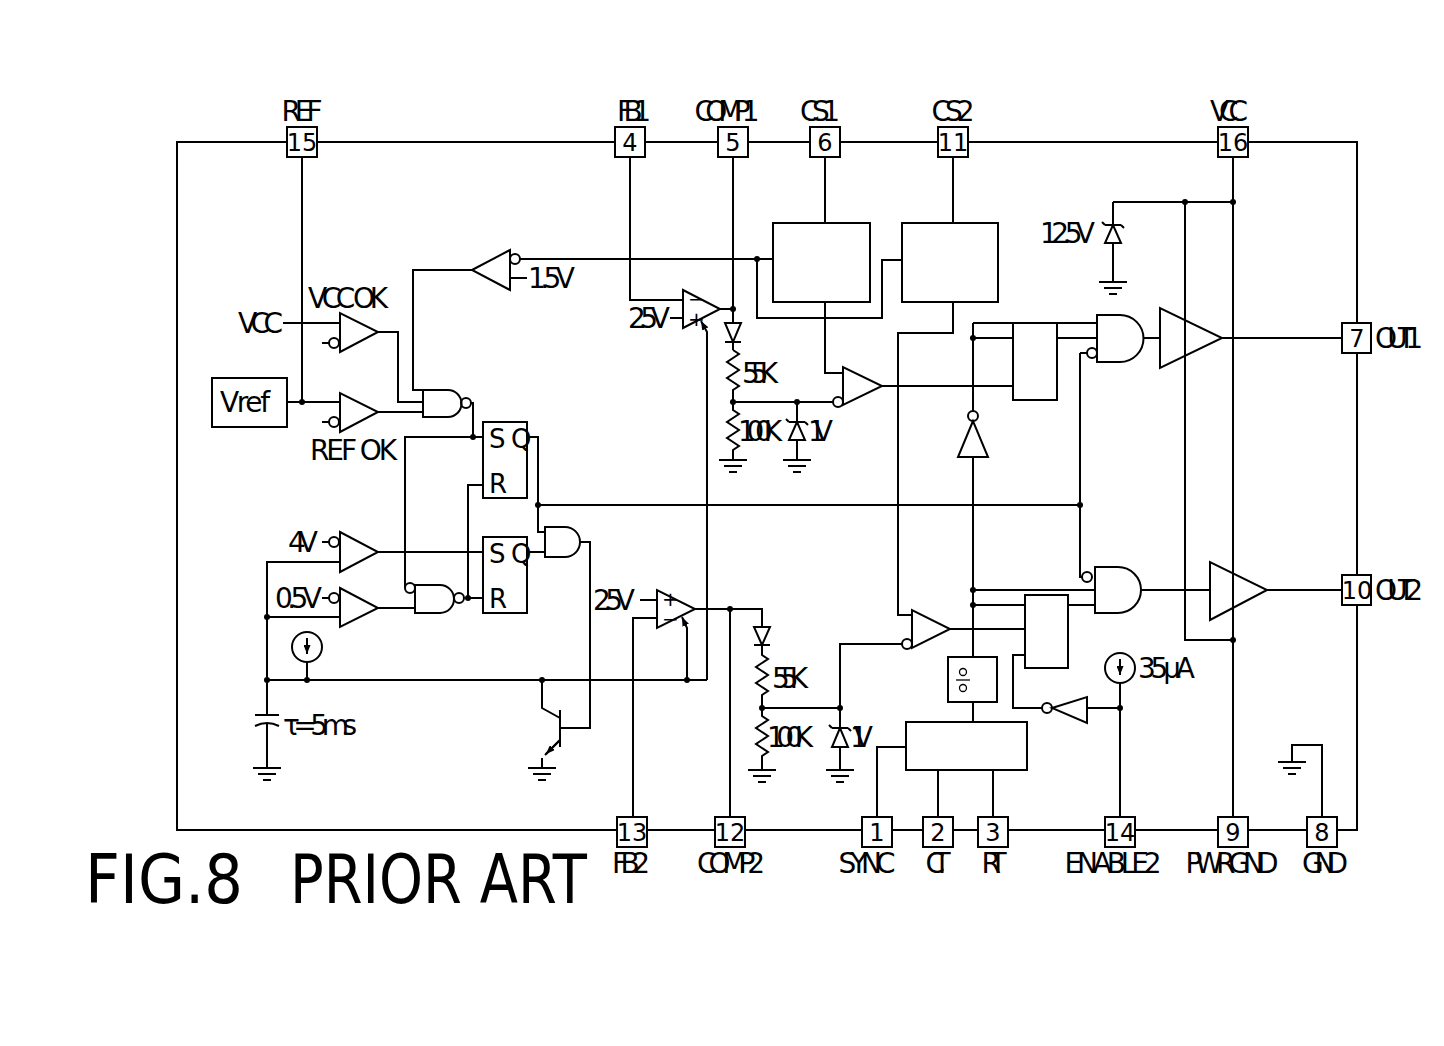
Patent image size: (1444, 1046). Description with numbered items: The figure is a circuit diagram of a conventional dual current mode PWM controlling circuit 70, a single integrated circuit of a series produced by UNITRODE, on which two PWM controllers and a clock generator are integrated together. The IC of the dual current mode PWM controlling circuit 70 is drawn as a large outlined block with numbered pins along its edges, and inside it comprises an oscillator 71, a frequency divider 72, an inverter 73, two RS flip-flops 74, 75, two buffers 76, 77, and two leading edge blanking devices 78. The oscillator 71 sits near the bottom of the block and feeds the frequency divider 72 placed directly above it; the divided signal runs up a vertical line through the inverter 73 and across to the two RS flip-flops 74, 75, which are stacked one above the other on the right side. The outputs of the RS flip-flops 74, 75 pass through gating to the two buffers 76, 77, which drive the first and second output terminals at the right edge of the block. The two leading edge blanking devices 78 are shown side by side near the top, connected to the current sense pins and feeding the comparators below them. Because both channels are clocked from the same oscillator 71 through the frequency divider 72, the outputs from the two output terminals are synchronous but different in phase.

The dual current mode PWM controlling circuit 70 is at (773, 117).
The oscillator 71 is at (1027, 732).
The frequency divider 72 is at (948, 678).
The inverter 73 is at (966, 452).
The RS flip-flop 74 is at (1070, 640).
The RS flip-flop 75 is at (1043, 400).
The buffer 76 is at (1244, 583).
The buffer 77 is at (1197, 347).
The leading edge blanking device 78 is at (915, 225).